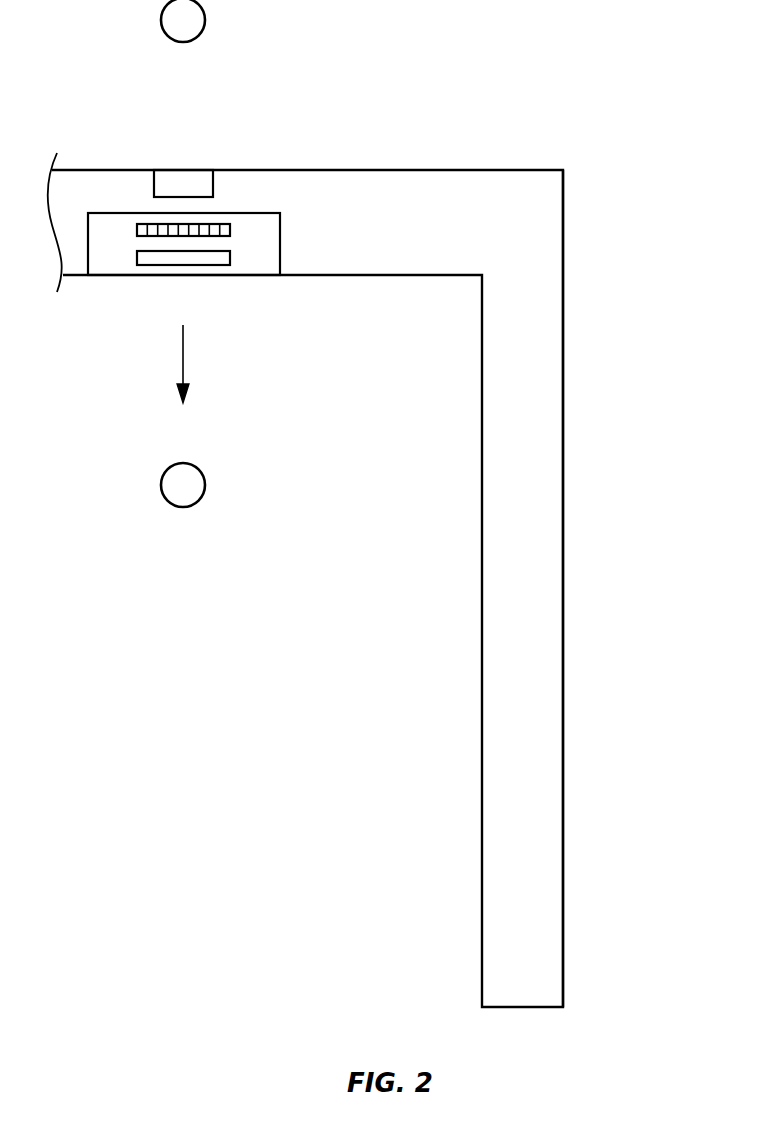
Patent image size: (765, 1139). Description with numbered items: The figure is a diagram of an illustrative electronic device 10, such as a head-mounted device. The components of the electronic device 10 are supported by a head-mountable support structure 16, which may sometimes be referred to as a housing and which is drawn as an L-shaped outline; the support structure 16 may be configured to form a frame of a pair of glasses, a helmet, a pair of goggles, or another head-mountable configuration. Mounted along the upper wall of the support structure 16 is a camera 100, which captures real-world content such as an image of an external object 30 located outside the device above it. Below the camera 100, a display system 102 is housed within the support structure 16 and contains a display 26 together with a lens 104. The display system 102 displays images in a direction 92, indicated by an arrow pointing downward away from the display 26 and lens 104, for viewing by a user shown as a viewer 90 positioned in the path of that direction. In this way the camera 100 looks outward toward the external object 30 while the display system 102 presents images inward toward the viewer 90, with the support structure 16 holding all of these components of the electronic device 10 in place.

The electronic device 10 is at (638, 170).
The support structure 16 is at (565, 852).
The display 26 is at (232, 230).
The external object 30 is at (205, 21).
The viewer 90 is at (206, 487).
The direction 92 is at (185, 357).
The camera 100 is at (184, 177).
The display system 102 is at (283, 247).
The lens 104 is at (232, 259).